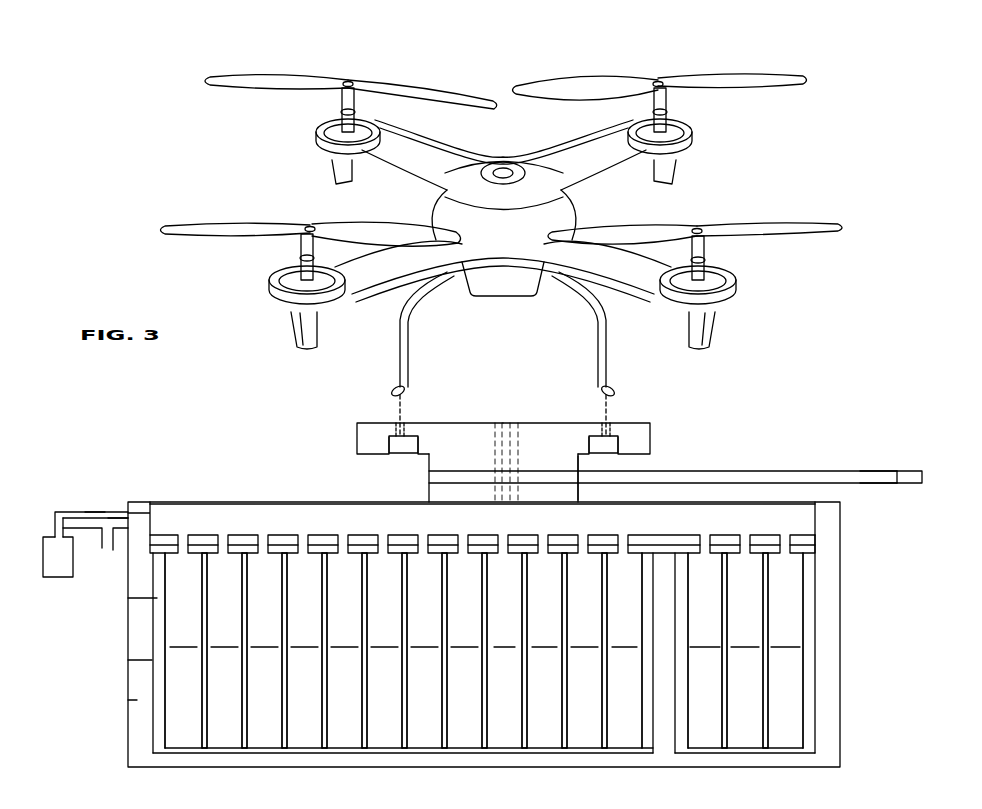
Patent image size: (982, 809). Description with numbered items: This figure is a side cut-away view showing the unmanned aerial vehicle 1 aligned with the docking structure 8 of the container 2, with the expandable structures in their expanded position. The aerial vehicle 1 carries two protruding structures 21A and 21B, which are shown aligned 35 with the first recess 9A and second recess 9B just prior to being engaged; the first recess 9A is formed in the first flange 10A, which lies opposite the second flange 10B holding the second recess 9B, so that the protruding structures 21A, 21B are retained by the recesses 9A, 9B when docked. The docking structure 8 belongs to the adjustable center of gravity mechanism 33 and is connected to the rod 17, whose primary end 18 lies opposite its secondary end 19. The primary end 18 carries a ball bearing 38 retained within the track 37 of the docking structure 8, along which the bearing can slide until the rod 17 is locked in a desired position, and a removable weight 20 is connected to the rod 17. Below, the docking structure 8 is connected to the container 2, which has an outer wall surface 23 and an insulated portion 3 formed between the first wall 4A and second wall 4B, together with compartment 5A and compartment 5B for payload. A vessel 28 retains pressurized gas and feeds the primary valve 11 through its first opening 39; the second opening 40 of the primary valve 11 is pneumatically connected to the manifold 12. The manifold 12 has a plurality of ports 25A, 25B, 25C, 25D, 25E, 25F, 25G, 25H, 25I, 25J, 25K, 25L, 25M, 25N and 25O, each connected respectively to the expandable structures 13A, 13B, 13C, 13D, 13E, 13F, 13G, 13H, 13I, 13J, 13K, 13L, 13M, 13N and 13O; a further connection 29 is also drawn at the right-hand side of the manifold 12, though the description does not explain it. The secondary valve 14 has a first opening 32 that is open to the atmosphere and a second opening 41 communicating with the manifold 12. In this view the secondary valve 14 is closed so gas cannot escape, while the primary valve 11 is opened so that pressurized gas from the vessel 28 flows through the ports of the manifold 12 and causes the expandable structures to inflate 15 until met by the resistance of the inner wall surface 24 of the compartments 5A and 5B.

The unmanned aerial vehicle 1 is at (310, 226).
The container 2 is at (127, 725).
The insulated portion 3 is at (127, 700).
The first wall 4A is at (128, 598).
The second wall 4B is at (130, 660).
The compartment 5A is at (157, 612).
The compartment 5B is at (812, 667).
The docking structure 8 is at (468, 457).
The first recess 9A is at (421, 439).
The second recess 9B is at (585, 439).
The first flange 10A is at (357, 436).
The second flange 10B is at (650, 436).
The primary valve 11 is at (88, 519).
The manifold 12 is at (163, 518).
The expandable structure 13A is at (183, 650).
The expandable structure 13B is at (224, 650).
The expandable structure 13C is at (264, 650).
The expandable structure 13D is at (304, 650).
The expandable structure 13E is at (344, 650).
The expandable structure 13F is at (384, 650).
The expandable structure 13G is at (424, 650).
The expandable structure 13H is at (464, 650).
The expandable structure 13I is at (504, 650).
The expandable structure 13J is at (544, 650).
The expandable structure 13K is at (584, 650).
The expandable structure 13L is at (624, 650).
The expandable structure 13M is at (705, 650).
The expandable structure 13N is at (745, 650).
The expandable structure 13O is at (785, 650).
The secondary valve 14 is at (103, 550).
The inflate 15 is at (178, 725).
The rod 17 is at (789, 479).
The primary end 18 is at (578, 475).
The secondary end 19 is at (876, 479).
The weight 20 is at (908, 478).
The protruding structure 21A is at (390, 386).
The protruding structure 21B is at (616, 386).
The outer wall surface 23 is at (237, 501).
The inner wall surface 24 is at (652, 749).
The port 25A is at (187, 543).
The port 25B is at (227, 543).
The port 25C is at (267, 543).
The port 25D is at (307, 543).
The port 25E is at (347, 543).
The port 25F is at (387, 543).
The port 25G is at (427, 543).
The port 25H is at (467, 543).
The port 25I is at (507, 543).
The port 25J is at (547, 543).
The port 25K is at (587, 543).
The port 25L is at (627, 543).
The port 25M is at (708, 543).
The port 25N is at (748, 543).
The port 25O is at (788, 543).
The vessel 28 is at (58, 577).
The right connection line 29 is at (801, 552).
The first opening 32 is at (112, 552).
The adjustable center of gravity mechanism 33 is at (705, 427).
The aligned 35 is at (398, 416).
The track 37 is at (430, 479).
The ball bearing 38 is at (574, 473).
The first opening 39 is at (62, 517).
The second opening 40 is at (93, 517).
The second opening 41 is at (118, 520).